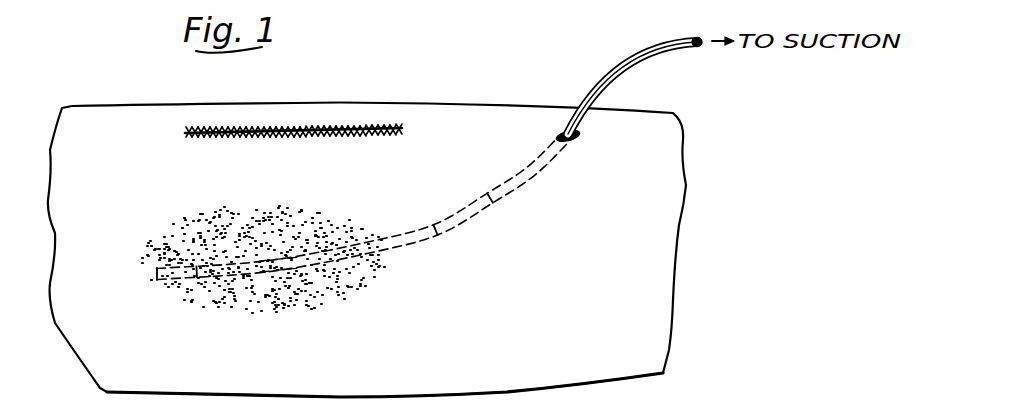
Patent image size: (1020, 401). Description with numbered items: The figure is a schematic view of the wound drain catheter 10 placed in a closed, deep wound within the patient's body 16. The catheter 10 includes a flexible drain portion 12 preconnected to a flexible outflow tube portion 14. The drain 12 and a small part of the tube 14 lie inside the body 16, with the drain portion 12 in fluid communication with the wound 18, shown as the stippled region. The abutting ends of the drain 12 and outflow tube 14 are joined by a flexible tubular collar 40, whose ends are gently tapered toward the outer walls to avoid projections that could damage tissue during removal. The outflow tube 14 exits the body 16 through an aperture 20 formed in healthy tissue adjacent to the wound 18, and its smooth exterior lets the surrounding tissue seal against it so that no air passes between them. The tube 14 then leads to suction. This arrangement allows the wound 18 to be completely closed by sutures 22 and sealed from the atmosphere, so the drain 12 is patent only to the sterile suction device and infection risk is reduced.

The wound drain catheter 10 is at (375, 258).
The drain portion 12 is at (287, 275).
The outflow tube portion 14 is at (637, 60).
The patient's body 16 is at (148, 101).
The wound 18 is at (207, 223).
The aperture 20 is at (562, 132).
The sutures 22 is at (312, 128).
The flexible tubular collar 40 is at (470, 222).